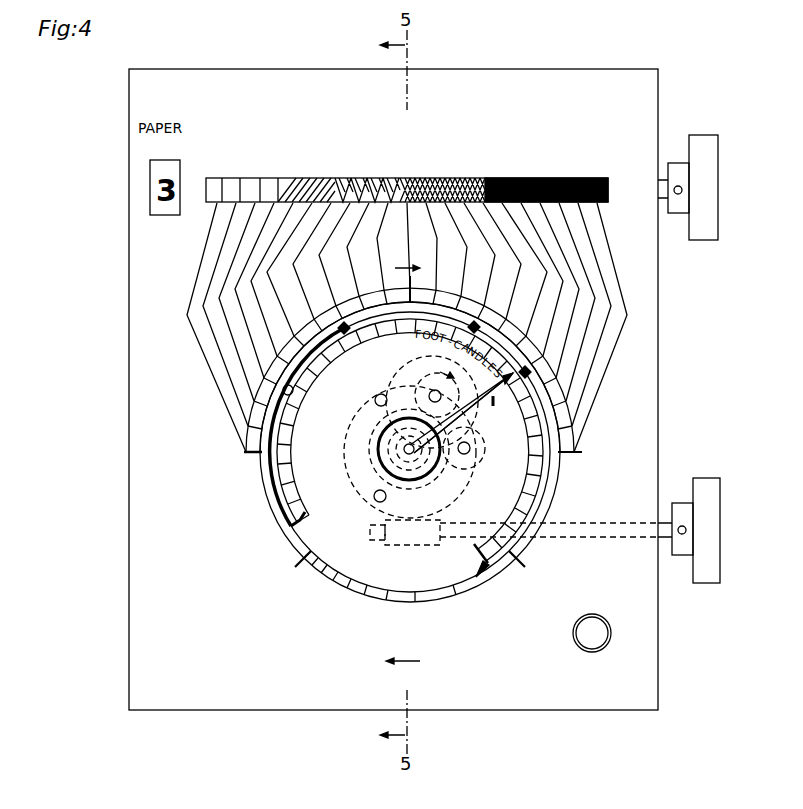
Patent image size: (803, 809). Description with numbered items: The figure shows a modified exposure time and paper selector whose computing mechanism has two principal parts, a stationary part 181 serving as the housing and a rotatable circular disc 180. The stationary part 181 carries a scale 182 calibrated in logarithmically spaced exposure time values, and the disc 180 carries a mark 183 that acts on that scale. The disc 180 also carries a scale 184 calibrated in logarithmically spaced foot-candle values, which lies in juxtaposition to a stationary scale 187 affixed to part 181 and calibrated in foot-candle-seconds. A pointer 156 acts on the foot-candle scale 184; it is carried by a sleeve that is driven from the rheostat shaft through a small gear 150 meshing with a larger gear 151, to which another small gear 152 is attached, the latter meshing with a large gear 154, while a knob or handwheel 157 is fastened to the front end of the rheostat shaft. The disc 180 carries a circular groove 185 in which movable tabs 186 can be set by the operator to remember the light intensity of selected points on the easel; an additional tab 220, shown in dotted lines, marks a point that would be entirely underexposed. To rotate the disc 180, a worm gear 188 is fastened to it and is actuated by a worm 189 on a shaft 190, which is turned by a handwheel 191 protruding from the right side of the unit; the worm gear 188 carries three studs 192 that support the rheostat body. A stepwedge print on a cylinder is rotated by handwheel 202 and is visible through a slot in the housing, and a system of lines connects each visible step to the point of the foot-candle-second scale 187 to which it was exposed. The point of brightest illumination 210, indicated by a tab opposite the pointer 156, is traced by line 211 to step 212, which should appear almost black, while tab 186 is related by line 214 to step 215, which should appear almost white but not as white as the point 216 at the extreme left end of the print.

The stationary part 181 is at (134, 594).
The step 212 is at (514, 178).
The step 215 is at (350, 178).
The point 216 is at (216, 178).
The line 214 is at (342, 242).
The line 211 is at (570, 322).
The point 210 is at (518, 371).
The stationary scale 187 is at (246, 432).
The rotatable disc 180 is at (285, 533).
The scale 182 is at (322, 612).
The scale 184 is at (282, 470).
The groove 185 is at (275, 488).
The movable tabs 186 is at (344, 328).
The pointer 156 is at (478, 402).
The small gear 150 is at (345, 452).
The worm gear 188 is at (366, 500).
The large gear 154 is at (352, 412).
The larger gear 151 is at (408, 378).
The small gear 152 is at (439, 386).
The knob or handwheel 157 is at (476, 460).
The studs 192 is at (387, 497).
The additional tab 220 is at (283, 390).
The worm 189 is at (402, 545).
The shaft 190 is at (600, 537).
The mark 183 is at (478, 573).
The handwheel 202 is at (710, 238).
The handwheel 191 is at (705, 478).